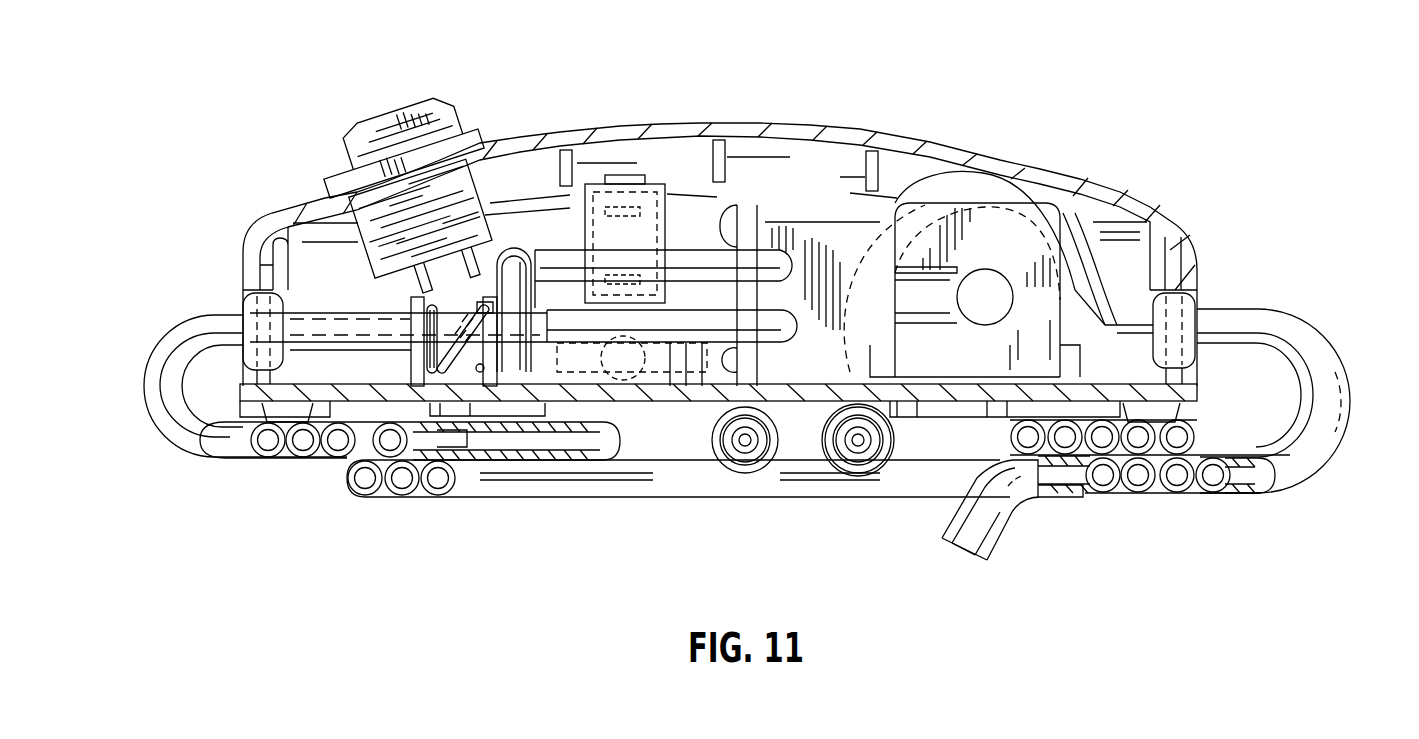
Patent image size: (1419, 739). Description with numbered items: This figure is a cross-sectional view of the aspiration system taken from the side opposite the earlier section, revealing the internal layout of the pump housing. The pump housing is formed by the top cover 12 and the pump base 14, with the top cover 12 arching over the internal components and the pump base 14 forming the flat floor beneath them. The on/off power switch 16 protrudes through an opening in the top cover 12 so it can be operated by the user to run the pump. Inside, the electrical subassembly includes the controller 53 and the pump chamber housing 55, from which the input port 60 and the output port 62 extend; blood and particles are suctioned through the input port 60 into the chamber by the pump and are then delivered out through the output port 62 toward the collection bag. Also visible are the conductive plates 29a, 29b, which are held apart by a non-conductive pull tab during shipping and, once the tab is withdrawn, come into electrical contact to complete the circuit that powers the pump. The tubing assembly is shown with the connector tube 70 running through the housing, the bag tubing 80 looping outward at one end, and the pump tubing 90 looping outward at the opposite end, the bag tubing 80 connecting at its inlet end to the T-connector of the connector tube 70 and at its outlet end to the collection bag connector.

The top cover 12 is at (893, 142).
The pump base 14 is at (676, 393).
The on/off power switch 16 is at (368, 153).
The conductive plate 29a is at (410, 333).
The conductive plate 29b is at (484, 300).
The controller 53 is at (620, 224).
The housing (chamber) 55 is at (838, 234).
The input port 60 is at (780, 368).
The output port 62 is at (790, 233).
The connector tube 70 is at (687, 240).
The bag tubing 80 is at (1337, 412).
The pump tubing 90 is at (165, 398).